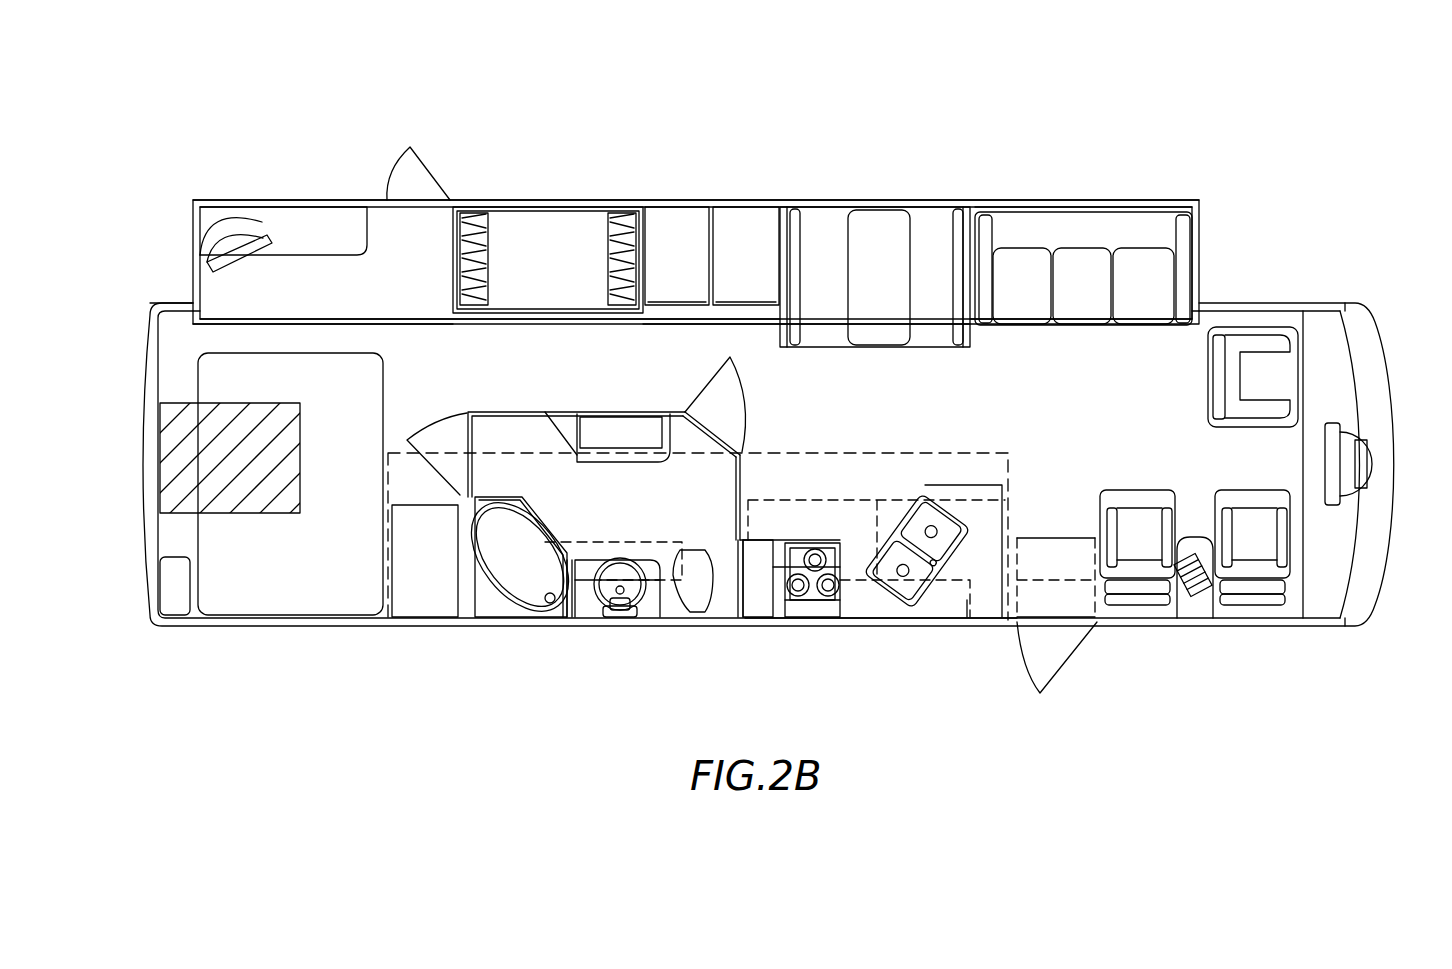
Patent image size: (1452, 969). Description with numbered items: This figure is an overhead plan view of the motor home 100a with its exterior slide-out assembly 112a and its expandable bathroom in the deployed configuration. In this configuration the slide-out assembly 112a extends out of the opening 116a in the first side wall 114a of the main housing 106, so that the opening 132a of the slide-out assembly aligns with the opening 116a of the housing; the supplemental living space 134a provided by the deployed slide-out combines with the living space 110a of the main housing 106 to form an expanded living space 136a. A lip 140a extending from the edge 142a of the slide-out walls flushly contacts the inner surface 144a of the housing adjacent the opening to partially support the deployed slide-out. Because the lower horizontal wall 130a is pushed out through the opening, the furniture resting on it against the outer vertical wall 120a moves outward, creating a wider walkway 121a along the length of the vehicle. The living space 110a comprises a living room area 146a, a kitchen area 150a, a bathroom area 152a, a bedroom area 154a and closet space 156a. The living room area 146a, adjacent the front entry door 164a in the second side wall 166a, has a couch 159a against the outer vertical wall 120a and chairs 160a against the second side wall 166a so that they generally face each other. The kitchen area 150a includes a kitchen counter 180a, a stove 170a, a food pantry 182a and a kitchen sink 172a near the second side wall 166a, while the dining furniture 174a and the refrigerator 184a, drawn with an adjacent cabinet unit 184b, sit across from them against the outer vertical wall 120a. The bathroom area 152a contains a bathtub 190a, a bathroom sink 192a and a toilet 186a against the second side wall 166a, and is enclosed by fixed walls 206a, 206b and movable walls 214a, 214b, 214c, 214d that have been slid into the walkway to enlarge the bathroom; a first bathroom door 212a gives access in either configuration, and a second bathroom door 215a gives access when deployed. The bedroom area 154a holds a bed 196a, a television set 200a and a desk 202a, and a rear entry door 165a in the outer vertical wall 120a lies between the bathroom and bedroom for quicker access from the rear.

The motor home 100a is at (1378, 392).
The rear end of vehicle 106 is at (155, 348).
The living space 110a is at (989, 148).
The exterior slide-out assembly 112a is at (626, 215).
The first side wall 114a is at (1280, 302).
The opening 116a is at (193, 296).
The outer vertical wall 120a is at (786, 199).
The wider walkway 121a is at (984, 452).
The lower horizontal wall 130a is at (402, 309).
The opening of the slide-out assembly 132a is at (222, 308).
The supplemental living space 134a is at (824, 238).
The expanded living space 136a is at (676, 340).
The lip 140a is at (187, 310).
The edge 142a is at (200, 307).
The inner surface 144a is at (188, 308).
The living room area 146a is at (1205, 625).
The kitchen area 150a is at (860, 404).
The bathroom area 152a is at (607, 504).
The bedroom area 154a is at (248, 515).
The closet space 156a is at (540, 237).
The couch 159a is at (1080, 267).
The chairs 160a is at (1140, 525).
The front entry door 164a is at (1067, 660).
The rear entry door 165a is at (437, 196).
The second side wall 166a is at (966, 628).
The stove 170a is at (787, 552).
The kitchen sink 172a is at (917, 497).
The dining furniture 174a is at (862, 314).
The kitchen counter 180a is at (993, 527).
The food pantry 182a is at (745, 535).
The refrigerator 184a is at (677, 256).
The cabinet 184b is at (746, 256).
The toilet 186a is at (697, 598).
The bathtub 190a is at (523, 586).
The bathroom sink 192a is at (627, 594).
The bed 196a is at (363, 601).
The television set 200a is at (233, 222).
The desk 202a is at (318, 228).
The fixed wall 206a is at (470, 560).
The fixed wall 206b is at (739, 568).
The first bathroom door 212a is at (707, 386).
The movable wall 214a is at (468, 465).
The movable wall 214b is at (585, 412).
The movable wall 214c is at (727, 441).
The movable wall 214d is at (755, 475).
The second bathroom door 215a is at (409, 438).